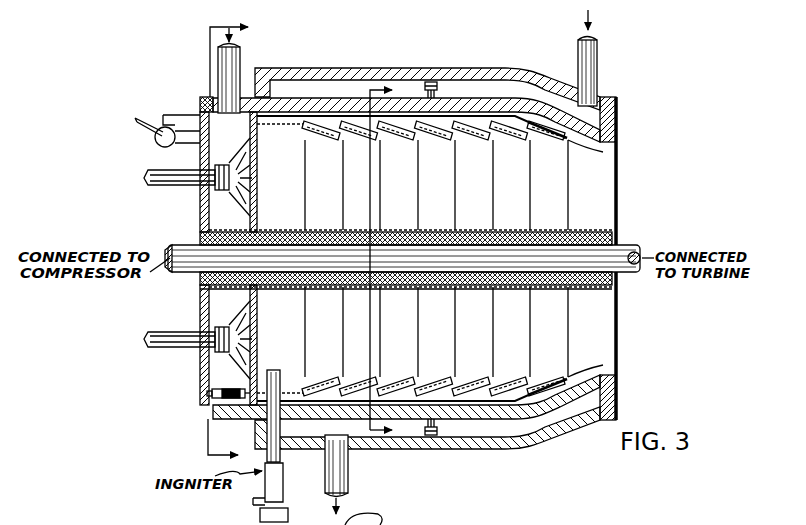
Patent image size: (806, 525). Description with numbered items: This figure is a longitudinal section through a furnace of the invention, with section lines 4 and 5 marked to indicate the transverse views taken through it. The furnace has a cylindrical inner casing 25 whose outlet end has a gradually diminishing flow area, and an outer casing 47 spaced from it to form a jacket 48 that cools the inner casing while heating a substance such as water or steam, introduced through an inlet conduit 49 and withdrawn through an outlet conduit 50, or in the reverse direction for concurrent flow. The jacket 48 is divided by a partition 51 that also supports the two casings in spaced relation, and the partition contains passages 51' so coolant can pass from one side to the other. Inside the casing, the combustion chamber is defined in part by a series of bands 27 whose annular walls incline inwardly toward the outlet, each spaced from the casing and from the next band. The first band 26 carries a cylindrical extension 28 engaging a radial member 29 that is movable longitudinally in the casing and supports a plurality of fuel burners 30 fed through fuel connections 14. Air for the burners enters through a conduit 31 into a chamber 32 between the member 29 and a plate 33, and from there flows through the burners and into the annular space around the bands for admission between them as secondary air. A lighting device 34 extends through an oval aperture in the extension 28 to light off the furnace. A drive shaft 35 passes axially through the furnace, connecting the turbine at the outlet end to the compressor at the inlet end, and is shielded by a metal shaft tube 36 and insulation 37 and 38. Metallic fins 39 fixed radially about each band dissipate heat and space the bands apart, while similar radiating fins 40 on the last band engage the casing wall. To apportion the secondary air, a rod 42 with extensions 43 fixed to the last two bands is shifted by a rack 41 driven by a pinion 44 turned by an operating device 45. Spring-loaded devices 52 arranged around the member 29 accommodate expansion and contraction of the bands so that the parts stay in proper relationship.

The section line 4- 4 is at (237, 242).
The section line 5- 5 is at (387, 261).
The fuel connection 14 is at (158, 186).
The casing 25 is at (292, 105).
The first furnace band 26 is at (336, 162).
The band 27 is at (448, 141).
The cylindrical extension 28 is at (258, 126).
The radial member 29 is at (258, 205).
The fuel burner 30 is at (240, 152).
The conduit 31 is at (243, 72).
The chamber 32 is at (200, 212).
The plate 33 is at (200, 302).
The lighting device 34 is at (268, 480).
The shaft 35 is at (640, 250).
The shaft tube 36 is at (620, 240).
The insulation 37 is at (622, 282).
The insulation 38 is at (618, 291).
The metallic fin 39 is at (318, 133).
The radiating fin 40 is at (603, 152).
The rack 41 is at (183, 113).
The rod 42 is at (345, 118).
The extension 43 is at (510, 125).
The pinion 44 is at (163, 127).
The operating device 45 is at (150, 129).
The outer casing 47 is at (335, 68).
The jacket 48 is at (480, 93).
The inlet conduit 49 is at (578, 62).
The outlet conduit 50 is at (350, 456).
The partition 51 is at (443, 253).
The passage 51' is at (419, 263).
The expansion and contraction means 52 is at (232, 390).